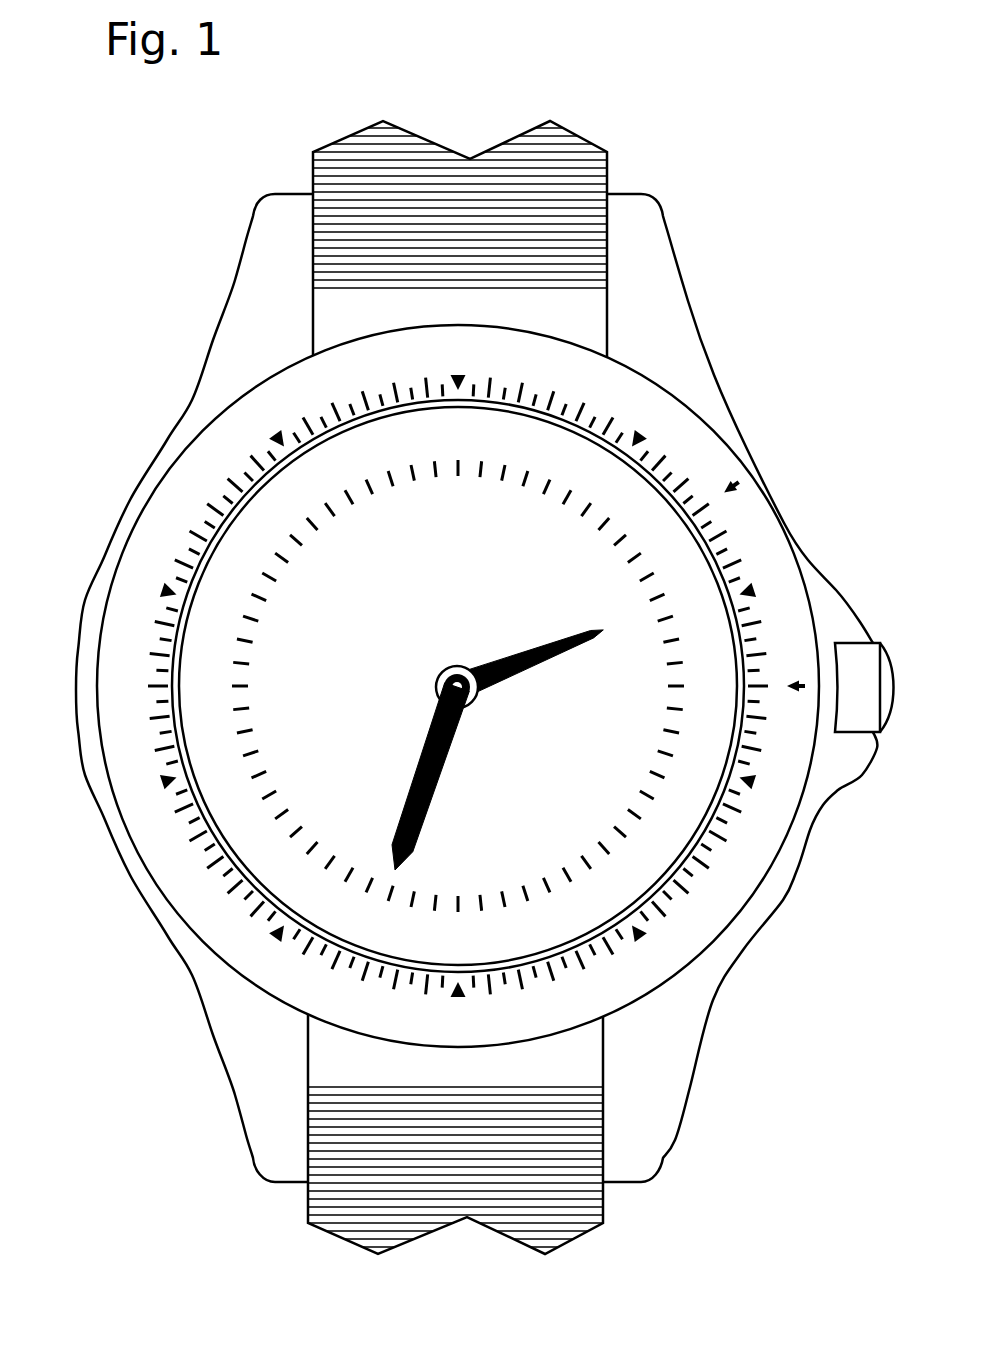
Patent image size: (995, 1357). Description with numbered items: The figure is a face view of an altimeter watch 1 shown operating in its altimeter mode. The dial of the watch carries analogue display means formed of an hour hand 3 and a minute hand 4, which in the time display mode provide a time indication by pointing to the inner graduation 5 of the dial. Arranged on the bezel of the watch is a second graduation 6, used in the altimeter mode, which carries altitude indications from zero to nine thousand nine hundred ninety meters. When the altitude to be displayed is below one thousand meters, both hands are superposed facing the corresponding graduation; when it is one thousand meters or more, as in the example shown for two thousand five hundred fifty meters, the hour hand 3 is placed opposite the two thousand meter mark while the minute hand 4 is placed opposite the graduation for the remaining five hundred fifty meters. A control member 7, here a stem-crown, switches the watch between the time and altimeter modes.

The altimeter watch 1 is at (92, 485).
The hour hand 3 is at (545, 668).
The minute hand 4 is at (415, 766).
The inner graduation 5 is at (587, 484).
The second graduation 6 is at (150, 822).
The control member 7 is at (865, 670).